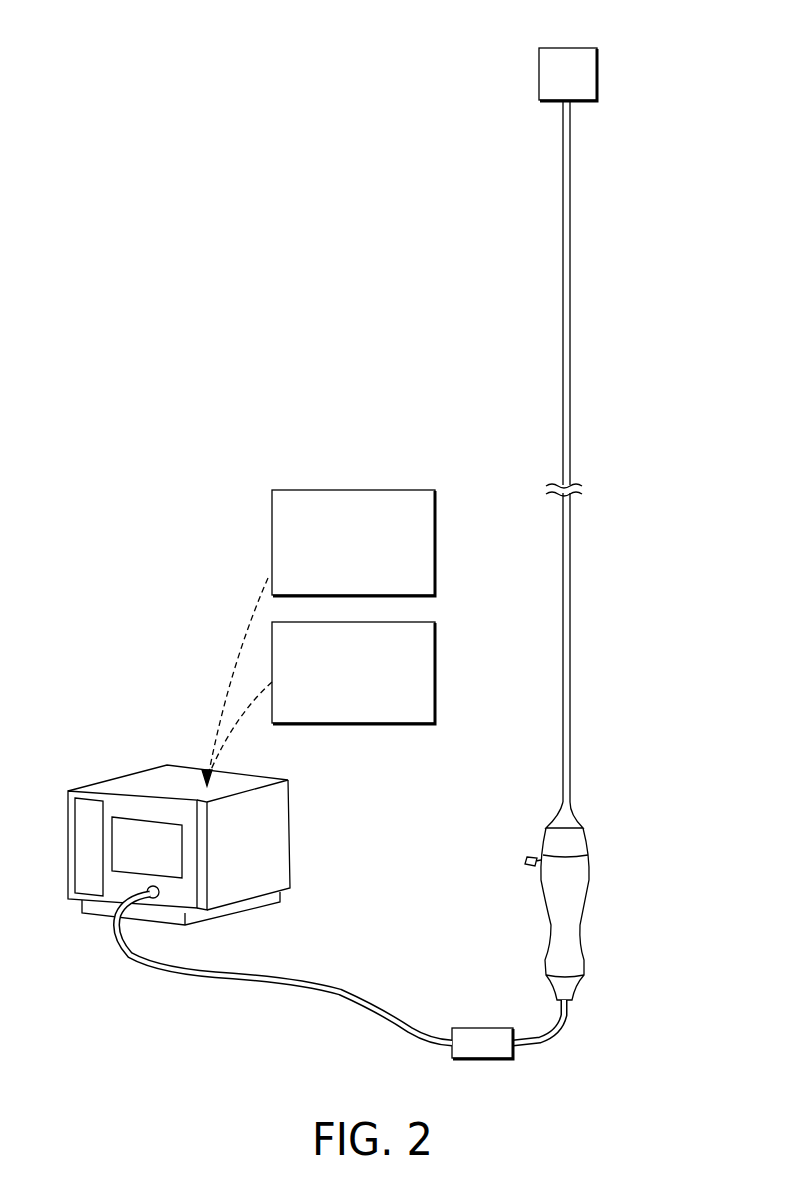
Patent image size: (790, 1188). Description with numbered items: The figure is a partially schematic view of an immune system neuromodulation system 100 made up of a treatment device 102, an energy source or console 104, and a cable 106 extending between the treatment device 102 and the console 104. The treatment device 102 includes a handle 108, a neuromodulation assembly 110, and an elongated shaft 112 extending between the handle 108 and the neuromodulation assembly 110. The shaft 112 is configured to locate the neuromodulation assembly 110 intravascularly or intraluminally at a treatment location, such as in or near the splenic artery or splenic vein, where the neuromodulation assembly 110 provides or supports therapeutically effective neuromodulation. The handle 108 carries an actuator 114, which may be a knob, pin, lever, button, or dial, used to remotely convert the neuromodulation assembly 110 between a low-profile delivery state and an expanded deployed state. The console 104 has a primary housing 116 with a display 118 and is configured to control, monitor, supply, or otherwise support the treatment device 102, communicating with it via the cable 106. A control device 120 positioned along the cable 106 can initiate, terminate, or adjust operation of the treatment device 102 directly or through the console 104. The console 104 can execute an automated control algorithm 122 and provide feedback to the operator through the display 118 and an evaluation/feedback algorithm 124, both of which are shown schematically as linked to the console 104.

The immune system neuromodulation system 100 is at (172, 228).
The treatment device 102 is at (598, 708).
The console 104 is at (135, 678).
The cable 106 is at (346, 990).
The handle 108 is at (565, 933).
The neuromodulation assembly 110 is at (597, 73).
The elongated shaft 112 is at (571, 373).
The actuator 114 is at (524, 858).
The primary housing 116 is at (290, 835).
The display 118 is at (147, 820).
The control device 120 is at (481, 1028).
The control algorithm 122 is at (438, 673).
The evaluation/feedback algorithm 124 is at (438, 541).